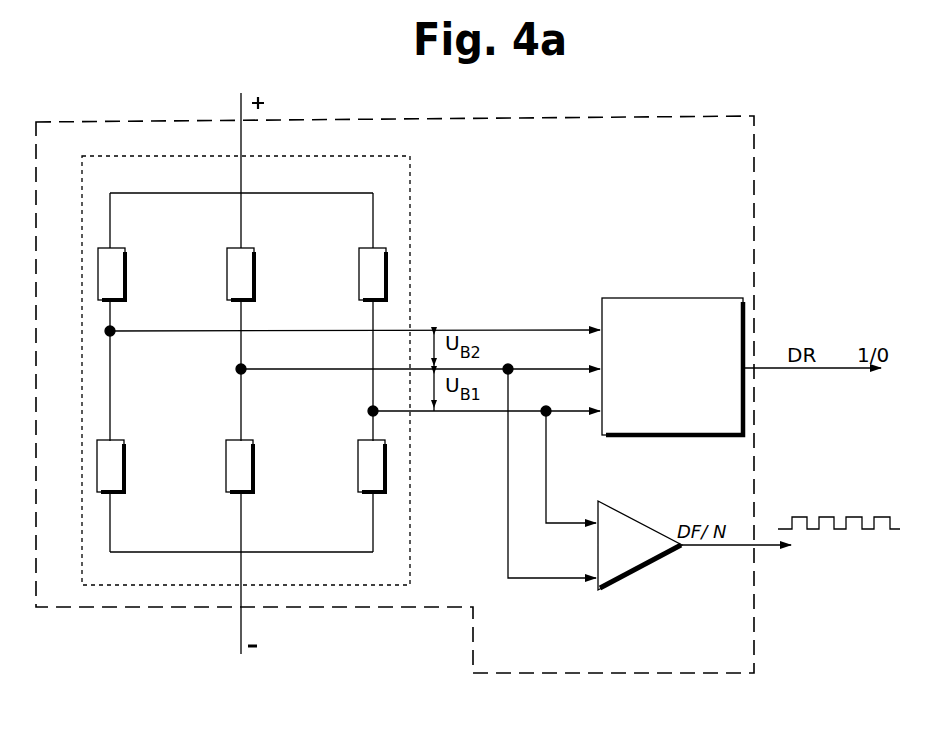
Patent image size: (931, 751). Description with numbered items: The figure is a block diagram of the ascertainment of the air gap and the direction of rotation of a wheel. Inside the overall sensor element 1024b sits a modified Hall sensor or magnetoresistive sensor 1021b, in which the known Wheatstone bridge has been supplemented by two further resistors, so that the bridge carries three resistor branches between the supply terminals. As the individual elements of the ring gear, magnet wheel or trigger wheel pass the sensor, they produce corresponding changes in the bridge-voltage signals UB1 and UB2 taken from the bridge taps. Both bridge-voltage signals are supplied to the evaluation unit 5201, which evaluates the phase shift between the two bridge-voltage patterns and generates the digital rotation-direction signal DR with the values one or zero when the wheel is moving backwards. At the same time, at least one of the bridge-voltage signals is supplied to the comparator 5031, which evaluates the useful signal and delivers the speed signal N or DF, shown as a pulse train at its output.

The overall sensor element 1024b is at (703, 112).
The Hall sensor or magnetoresistive sensor 1021b is at (410, 228).
The evaluation unit 5201 is at (668, 320).
The comparator 5031 is at (643, 547).